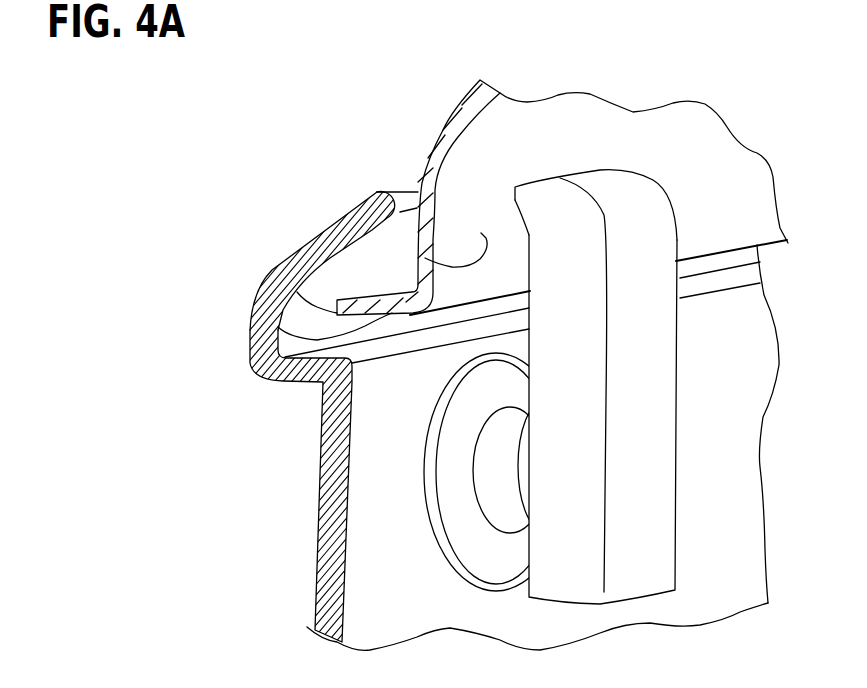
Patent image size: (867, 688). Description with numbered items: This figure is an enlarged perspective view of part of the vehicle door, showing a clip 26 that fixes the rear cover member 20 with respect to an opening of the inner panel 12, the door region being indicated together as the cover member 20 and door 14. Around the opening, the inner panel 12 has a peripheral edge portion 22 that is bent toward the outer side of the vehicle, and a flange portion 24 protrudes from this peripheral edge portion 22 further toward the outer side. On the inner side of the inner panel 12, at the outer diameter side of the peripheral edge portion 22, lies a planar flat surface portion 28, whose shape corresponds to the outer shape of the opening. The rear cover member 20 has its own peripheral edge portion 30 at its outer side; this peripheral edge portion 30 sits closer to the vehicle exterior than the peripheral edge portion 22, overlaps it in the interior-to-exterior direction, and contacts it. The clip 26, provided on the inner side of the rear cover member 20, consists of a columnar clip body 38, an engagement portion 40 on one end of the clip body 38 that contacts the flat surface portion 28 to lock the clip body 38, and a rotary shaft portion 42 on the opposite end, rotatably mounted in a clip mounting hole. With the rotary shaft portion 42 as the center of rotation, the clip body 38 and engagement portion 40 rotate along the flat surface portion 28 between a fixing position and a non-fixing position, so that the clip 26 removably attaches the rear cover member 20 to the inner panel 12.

The inner panel 12 is at (512, 135).
The door 14 is at (400, 415).
The rear cover member 20 is at (400, 415).
The peripheral edge portion 22 is at (263, 281).
The flange portion 24 is at (278, 327).
The clip 26 is at (536, 403).
The flat surface portion 28 is at (425, 258).
The peripheral edge portion 30 is at (403, 195).
The clip body 38 is at (650, 455).
The engagement portion 40 is at (515, 193).
The rotary shaft portion 42 is at (490, 513).